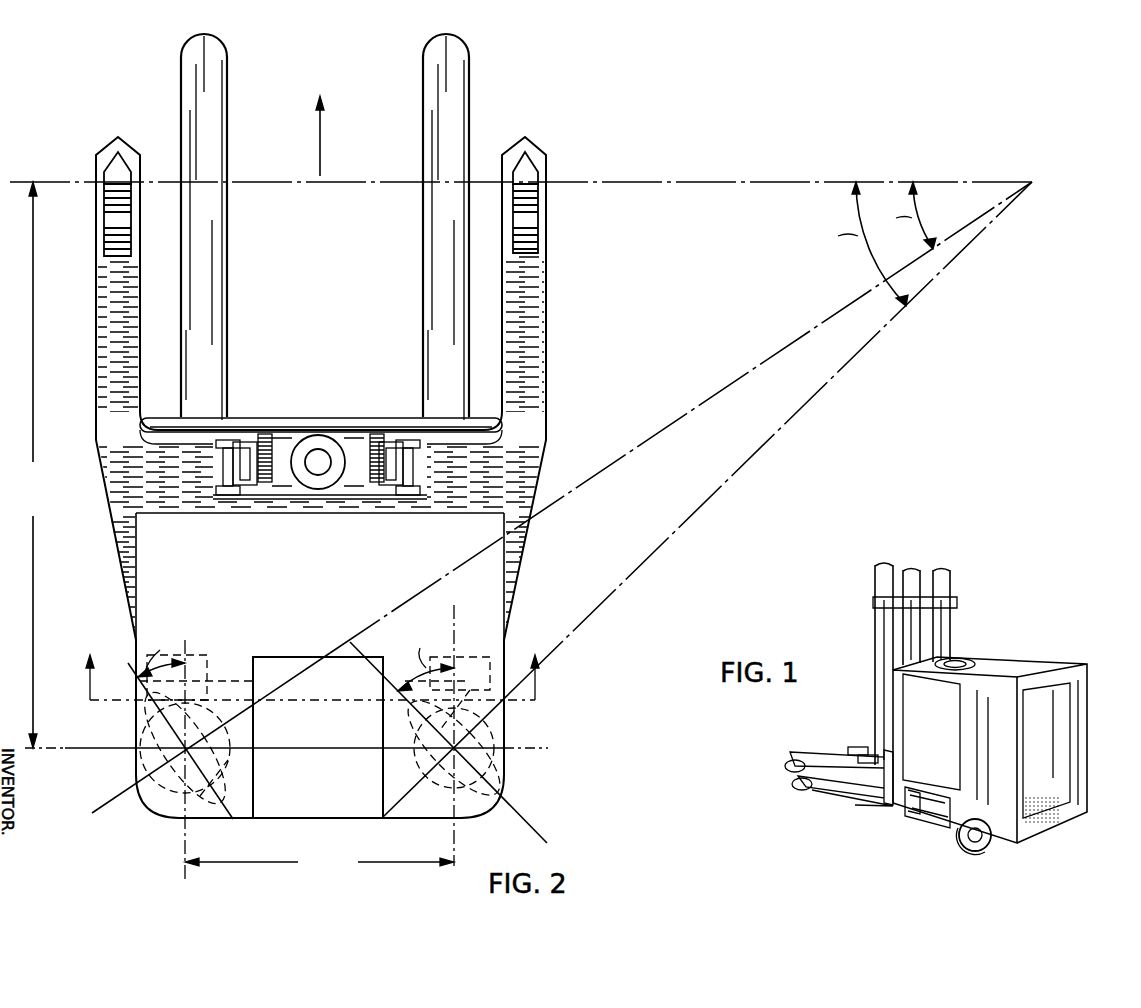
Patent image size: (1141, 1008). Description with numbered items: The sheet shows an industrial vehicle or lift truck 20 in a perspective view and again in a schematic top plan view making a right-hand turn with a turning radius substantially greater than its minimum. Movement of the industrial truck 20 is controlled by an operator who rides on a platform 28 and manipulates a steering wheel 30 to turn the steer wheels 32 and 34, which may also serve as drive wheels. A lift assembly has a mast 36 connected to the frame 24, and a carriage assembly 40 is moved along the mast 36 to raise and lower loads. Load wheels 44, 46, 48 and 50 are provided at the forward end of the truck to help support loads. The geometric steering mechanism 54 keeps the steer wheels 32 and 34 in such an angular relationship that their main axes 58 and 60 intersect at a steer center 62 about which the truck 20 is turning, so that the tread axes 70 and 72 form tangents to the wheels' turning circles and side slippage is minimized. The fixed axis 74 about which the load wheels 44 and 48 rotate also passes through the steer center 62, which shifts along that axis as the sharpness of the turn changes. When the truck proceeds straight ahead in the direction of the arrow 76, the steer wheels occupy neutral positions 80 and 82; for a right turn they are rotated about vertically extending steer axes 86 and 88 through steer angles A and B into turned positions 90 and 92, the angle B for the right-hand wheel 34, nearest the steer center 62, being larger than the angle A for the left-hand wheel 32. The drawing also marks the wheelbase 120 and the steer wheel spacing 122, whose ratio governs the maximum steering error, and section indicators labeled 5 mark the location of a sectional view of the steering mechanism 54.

In FIG. 2, the industrial truck 20 is at (740, 50).
In FIG. 1, the industrial truck 20 is at (1082, 552).
In FIG. 2, the frame 24 is at (548, 433).
In FIG. 1, the frame 24 is at (872, 792).
In FIG. 2, the platform 28 is at (300, 820).
In FIG. 1, the platform 28 is at (1040, 828).
In FIG. 1, the steering wheel 30 is at (970, 658).
In FIG. 2, the steer wheel 32 is at (156, 820).
In FIG. 1, the steer wheel 32 is at (962, 846).
In FIG. 2, the steer wheel 34 is at (478, 816).
In FIG. 1, the steer wheel 34 is at (852, 668).
In FIG. 2, the mast 36 is at (234, 440).
In FIG. 1, the mast 36 is at (875, 572).
In FIG. 2, the carriage assembly 40 is at (318, 436).
In FIG. 1, the carriage assembly 40 is at (812, 752).
In FIG. 2, the load wheel 44 is at (114, 152).
In FIG. 1, the load wheel 44 is at (784, 766).
In FIG. 2, the load wheel 46 is at (108, 222).
In FIG. 1, the load wheel 46 is at (792, 786).
In FIG. 2, the load wheel 48 is at (536, 165).
In FIG. 1, the load wheel 48 is at (850, 748).
In FIG. 2, the load wheel 50 is at (536, 232).
In FIG. 1, the load wheel 50 is at (866, 756).
In FIG. 2, the geometric steering mechanism 54 is at (330, 656).
In FIG. 2, the main axis 58 is at (702, 400).
In FIG. 2, the main axis 60 is at (722, 488).
In FIG. 2, the steer center 62 is at (1034, 182).
In FIG. 2, the tread axis 70 is at (222, 824).
In FIG. 2, the tread axis 72 is at (553, 836).
In FIG. 2, the fixed axis 74 is at (752, 182).
In FIG. 2, the arrow 76 is at (323, 140).
In FIG. 2, the neutral position 80 is at (197, 657).
In FIG. 2, the neutral position 82 is at (490, 660).
In FIG. 2, the steer axis 86 is at (142, 758).
In FIG. 2, the steer axis 88 is at (464, 744).
In FIG. 2, the turned position 90 is at (148, 720).
In FIG. 2, the turned position 92 is at (398, 740).
In FIG. 2, the wheelbase 120 is at (32, 465).
In FIG. 2, the steer wheel spacing 122 is at (319, 862).
In FIG. 2, the section line 5- 5 is at (310, 665).